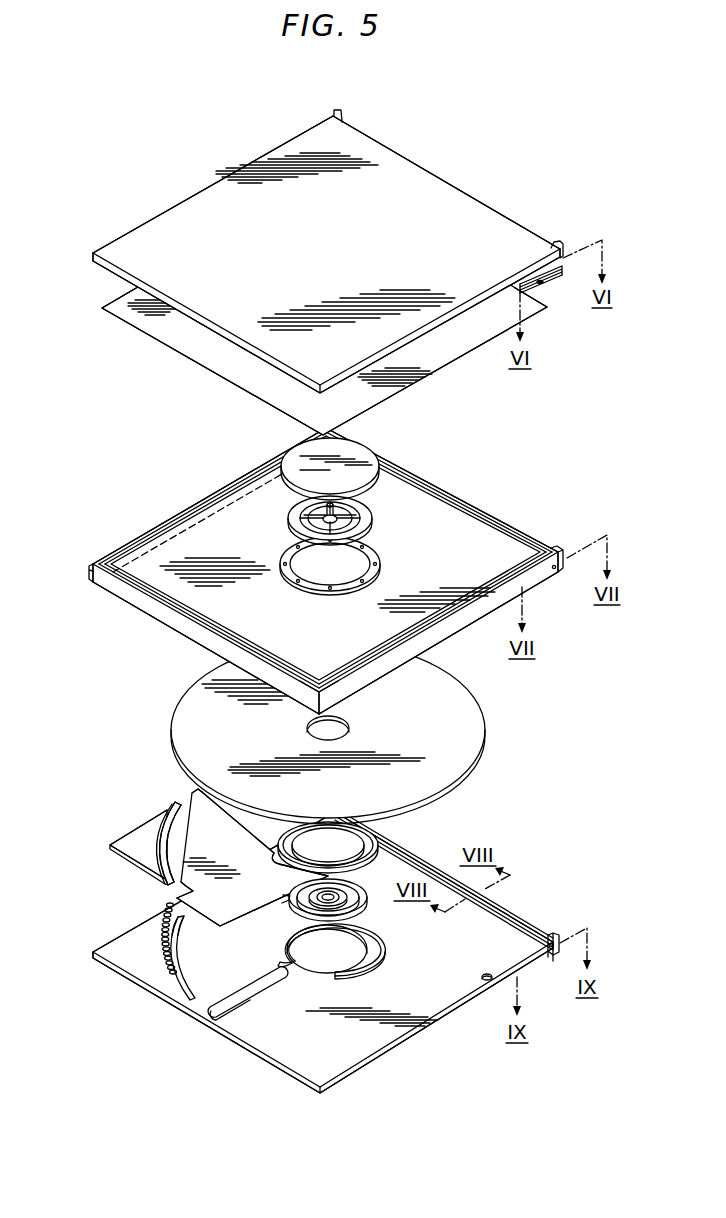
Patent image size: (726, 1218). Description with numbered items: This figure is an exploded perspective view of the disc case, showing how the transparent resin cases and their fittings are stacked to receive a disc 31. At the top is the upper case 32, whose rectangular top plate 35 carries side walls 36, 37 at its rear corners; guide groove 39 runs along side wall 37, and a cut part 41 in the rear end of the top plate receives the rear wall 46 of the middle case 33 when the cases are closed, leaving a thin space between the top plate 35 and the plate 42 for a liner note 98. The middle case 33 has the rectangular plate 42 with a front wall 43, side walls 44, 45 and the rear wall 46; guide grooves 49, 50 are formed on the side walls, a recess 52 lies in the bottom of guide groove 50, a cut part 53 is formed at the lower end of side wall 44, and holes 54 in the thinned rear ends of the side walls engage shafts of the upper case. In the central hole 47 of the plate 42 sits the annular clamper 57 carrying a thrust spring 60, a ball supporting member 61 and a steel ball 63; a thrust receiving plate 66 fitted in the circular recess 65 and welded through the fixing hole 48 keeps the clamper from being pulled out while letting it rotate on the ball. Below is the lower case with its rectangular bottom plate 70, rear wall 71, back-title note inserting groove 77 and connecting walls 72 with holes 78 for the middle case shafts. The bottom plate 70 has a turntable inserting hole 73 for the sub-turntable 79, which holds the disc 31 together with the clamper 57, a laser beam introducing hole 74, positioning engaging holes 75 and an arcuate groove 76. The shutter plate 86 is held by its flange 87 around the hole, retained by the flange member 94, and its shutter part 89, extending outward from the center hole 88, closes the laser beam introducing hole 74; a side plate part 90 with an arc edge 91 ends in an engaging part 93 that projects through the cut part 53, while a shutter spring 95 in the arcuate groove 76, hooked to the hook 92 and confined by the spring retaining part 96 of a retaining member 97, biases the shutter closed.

The disc 31 is at (188, 692).
The upper case 32 is at (351, 240).
The middle case 33 is at (178, 555).
The top plate 35 is at (410, 180).
The side wall 36 is at (334, 112).
The side wall 37 is at (547, 290).
The guide groove 39 is at (561, 276).
The cut part 41 is at (485, 207).
The plate 42 is at (315, 577).
The front wall 43 is at (167, 617).
The side wall 44 is at (130, 542).
The side wall 45 is at (392, 660).
The rear wall 46 is at (505, 530).
The hole 47 is at (345, 573).
The thrust receiving plate fixing hole 48 is at (378, 565).
The guide groove 49 is at (90, 566).
The guide groove 50 is at (355, 688).
The recess 52 is at (443, 645).
The cut part 53 is at (207, 512).
The hole 54 is at (554, 575).
The clamper 57 is at (372, 512).
The thrust spring 60 is at (356, 512).
The ball supporting member 61 is at (329, 532).
The steel ball 63 is at (373, 494).
The circular recess 65 is at (311, 588).
The thrust receiving plate 66 is at (333, 460).
The bottom plate 70 is at (331, 950).
The rear wall 71 is at (457, 879).
The connecting wall 72 is at (545, 931).
The turntable inserting hole 73 is at (377, 928).
The laser beam introducing hole 74 is at (251, 981).
The engaging hole 75 is at (486, 975).
The arcuate groove 76 is at (164, 969).
The back-title note inserting groove 77 is at (555, 880).
The hole 78 is at (553, 958).
The sub-turntable 79 is at (356, 890).
The shutter plate 86 is at (193, 918).
The flange 87 is at (382, 841).
The center hole 88 is at (352, 845).
The shutter part 89 is at (226, 846).
The side plate part 90 is at (224, 851).
The arc edge 91 is at (126, 833).
The hook 92 is at (178, 892).
The engaging part 93 is at (190, 792).
The flange member 94 is at (375, 963).
The shutter spring 95 is at (160, 942).
The spring retaining part 96 is at (160, 848).
The retaining member 97 is at (110, 845).
The liner note 98 is at (180, 343).